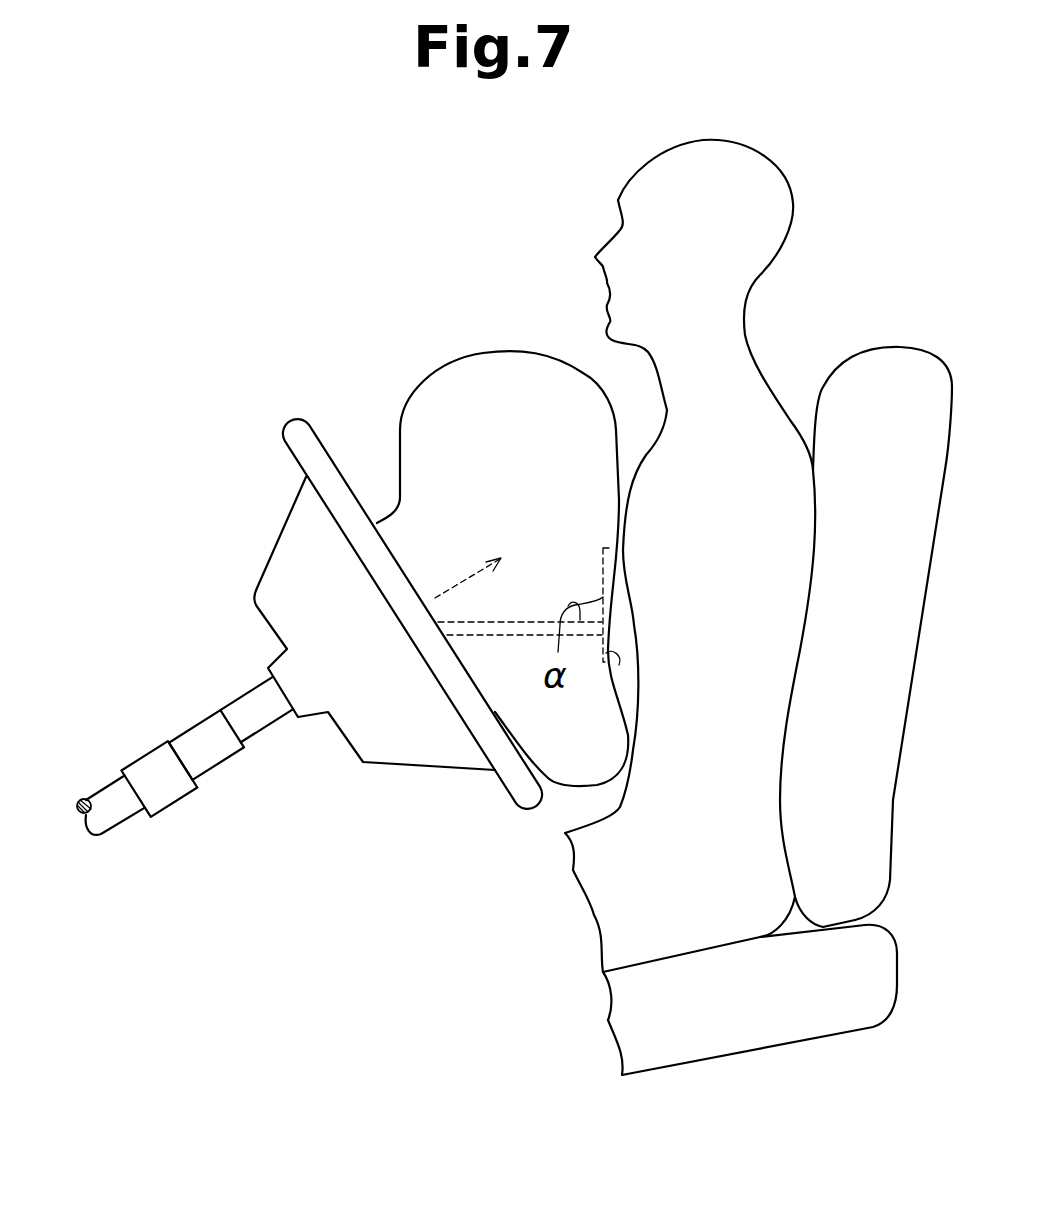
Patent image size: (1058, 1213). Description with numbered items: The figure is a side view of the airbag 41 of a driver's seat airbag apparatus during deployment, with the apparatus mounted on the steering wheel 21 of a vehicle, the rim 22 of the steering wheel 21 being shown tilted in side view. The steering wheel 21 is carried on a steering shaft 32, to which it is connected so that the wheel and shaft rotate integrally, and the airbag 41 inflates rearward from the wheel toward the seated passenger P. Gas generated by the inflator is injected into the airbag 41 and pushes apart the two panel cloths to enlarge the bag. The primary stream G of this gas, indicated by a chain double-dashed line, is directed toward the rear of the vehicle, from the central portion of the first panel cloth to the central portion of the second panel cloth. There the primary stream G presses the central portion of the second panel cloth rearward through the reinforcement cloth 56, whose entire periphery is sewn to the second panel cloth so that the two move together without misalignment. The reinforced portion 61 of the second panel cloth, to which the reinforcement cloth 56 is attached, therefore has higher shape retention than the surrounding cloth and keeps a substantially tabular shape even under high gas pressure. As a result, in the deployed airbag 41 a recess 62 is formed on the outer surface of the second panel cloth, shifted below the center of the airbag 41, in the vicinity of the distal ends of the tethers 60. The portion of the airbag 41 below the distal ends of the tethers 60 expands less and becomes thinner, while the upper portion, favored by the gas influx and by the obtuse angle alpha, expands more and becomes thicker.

The passenger P is at (793, 205).
The airbag 41 is at (517, 348).
The steering wheel rim 22 is at (299, 426).
The steering wheel 21 is at (363, 769).
The steering shaft 32 is at (240, 694).
The reinforcement cloth 56 is at (603, 548).
The tethers 60 is at (520, 622).
The reinforced portion 61 is at (603, 597).
The recess 62 is at (619, 665).
The primary stream G is at (463, 583).